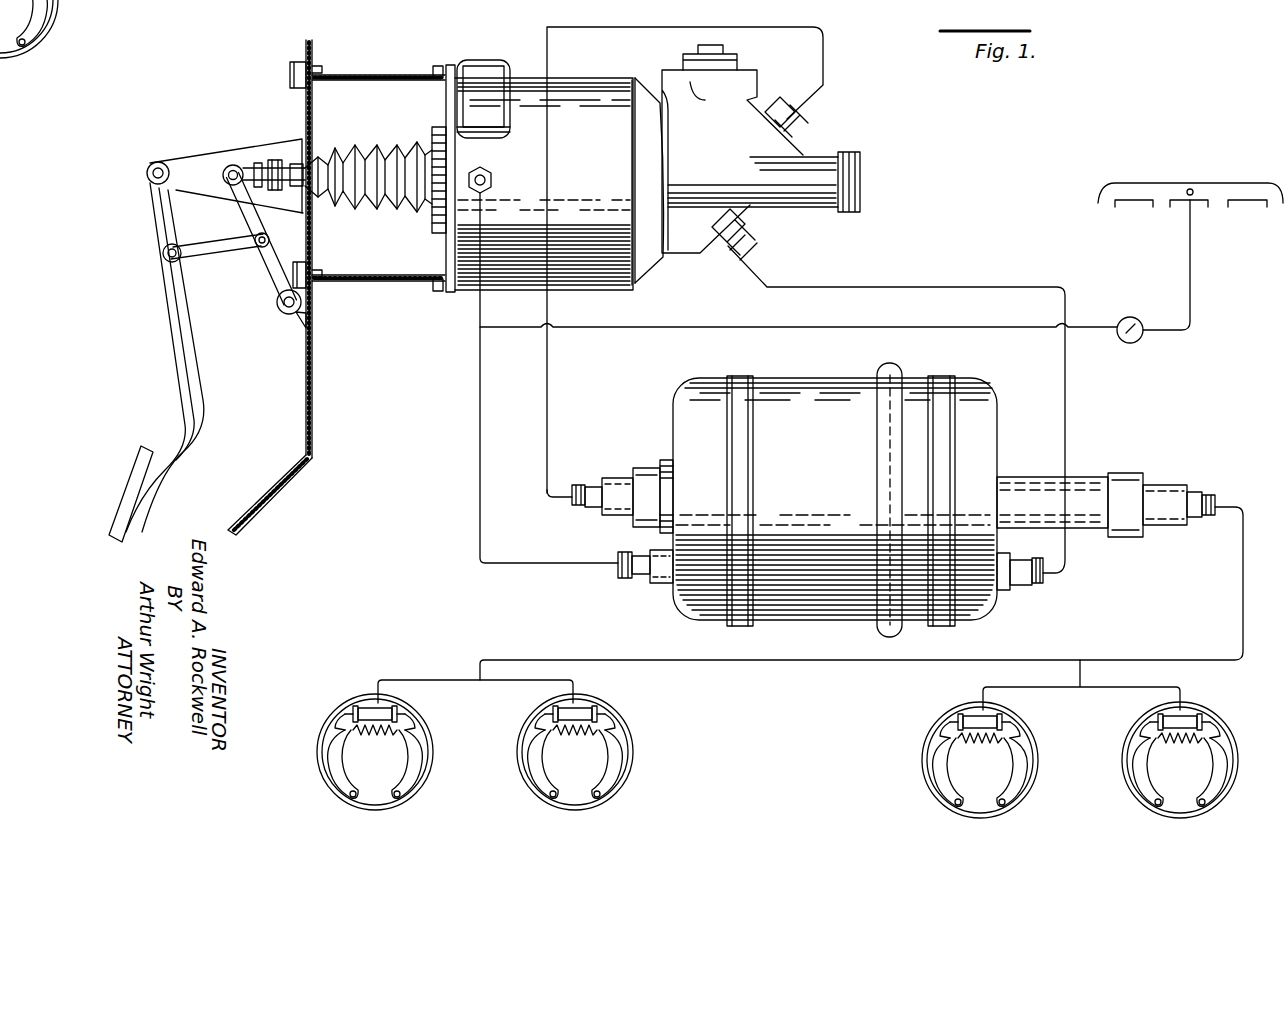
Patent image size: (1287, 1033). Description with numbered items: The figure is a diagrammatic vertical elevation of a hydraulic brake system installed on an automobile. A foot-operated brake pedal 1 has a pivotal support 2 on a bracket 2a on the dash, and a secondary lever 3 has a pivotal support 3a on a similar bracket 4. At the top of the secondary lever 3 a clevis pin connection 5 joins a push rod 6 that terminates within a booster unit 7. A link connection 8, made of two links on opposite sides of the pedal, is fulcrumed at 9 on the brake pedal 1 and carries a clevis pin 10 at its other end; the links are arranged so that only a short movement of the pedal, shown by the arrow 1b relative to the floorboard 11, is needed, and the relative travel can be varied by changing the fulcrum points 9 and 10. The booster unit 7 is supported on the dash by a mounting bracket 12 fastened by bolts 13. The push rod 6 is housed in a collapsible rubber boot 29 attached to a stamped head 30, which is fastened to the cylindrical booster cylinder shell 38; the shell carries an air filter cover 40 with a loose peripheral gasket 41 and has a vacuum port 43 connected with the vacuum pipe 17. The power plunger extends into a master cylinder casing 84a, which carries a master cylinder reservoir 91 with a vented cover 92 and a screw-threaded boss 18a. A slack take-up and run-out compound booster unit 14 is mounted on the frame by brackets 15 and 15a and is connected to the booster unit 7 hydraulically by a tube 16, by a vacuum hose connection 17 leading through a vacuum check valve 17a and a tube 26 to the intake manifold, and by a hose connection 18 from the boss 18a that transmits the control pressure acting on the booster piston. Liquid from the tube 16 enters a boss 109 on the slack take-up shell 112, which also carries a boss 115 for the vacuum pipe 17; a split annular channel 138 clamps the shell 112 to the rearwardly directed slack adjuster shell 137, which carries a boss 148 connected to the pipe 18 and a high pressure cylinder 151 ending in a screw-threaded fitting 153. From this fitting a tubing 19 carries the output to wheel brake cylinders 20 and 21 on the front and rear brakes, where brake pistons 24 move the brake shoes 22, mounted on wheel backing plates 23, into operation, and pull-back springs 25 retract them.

The brake pedal 1 is at (182, 350).
The range of movement of the pedal 1b is at (172, 533).
The pivotal support 2 is at (154, 168).
The bracket 2a is at (203, 158).
The secondary lever 3 is at (266, 275).
The pivotal support 3a is at (280, 310).
The bracket 4 is at (295, 330).
The clevis pin connection 5 is at (250, 166).
The push rod 6 is at (286, 164).
The booster unit 7 is at (535, 154).
The link connection 8 is at (212, 246).
The fulcrum 9 is at (163, 252).
The clevis pin 10 is at (268, 236).
The floorboard 11 is at (275, 500).
The mounting bracket 12 is at (382, 75).
The bolts 13 is at (298, 70).
The slack take-up and run-out compound booster unit 14 is at (893, 491).
The bracket 15 is at (745, 382).
The bracket 15a is at (945, 388).
The tube 16 is at (826, 50).
The vacuum hose connection 17 is at (935, 330).
The vacuum check valve 17a is at (1128, 316).
The hose connection 18 is at (868, 288).
The screw-threaded boss 18a is at (722, 262).
The tubing 19 is at (1245, 582).
The wheel brake cylinders 20 is at (975, 705).
The wheel brake cylinders 21 is at (372, 700).
The brake shoes 22 is at (932, 764).
The wheel backing plates 23 is at (958, 792).
The brake pistons 24 is at (1165, 710).
The pull-back springs 25 is at (978, 748).
The tube 26 is at (1192, 268).
The collapsible rubber boot 29 is at (370, 150).
The stamped head 30 is at (440, 115).
The booster cylinder shell 38 is at (580, 95).
The air filter cover 40 is at (487, 66).
The loose peripheral gasket 41 is at (506, 80).
The vacuum port 43 is at (490, 173).
The master cylinder casing 84a is at (797, 192).
The master cylinder reservoir 91 is at (735, 88).
The vented cover 92 is at (696, 46).
The boss 109 is at (624, 483).
The slack take-up shell 112 is at (823, 602).
The boss 115 is at (660, 585).
The slack adjuster shell 137 is at (912, 610).
The split annular channel 138 is at (887, 365).
The boss 148 is at (1016, 588).
The high pressure cylinder 151 is at (1075, 490).
The screw-threaded fitting 153 is at (1128, 490).